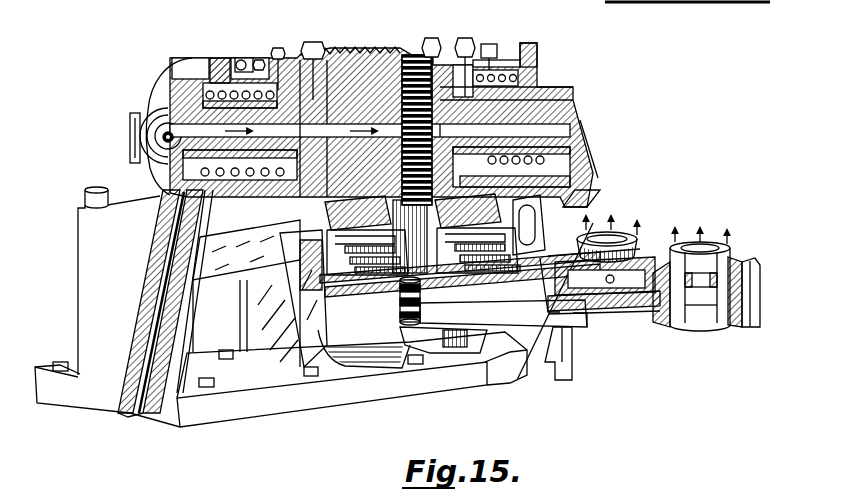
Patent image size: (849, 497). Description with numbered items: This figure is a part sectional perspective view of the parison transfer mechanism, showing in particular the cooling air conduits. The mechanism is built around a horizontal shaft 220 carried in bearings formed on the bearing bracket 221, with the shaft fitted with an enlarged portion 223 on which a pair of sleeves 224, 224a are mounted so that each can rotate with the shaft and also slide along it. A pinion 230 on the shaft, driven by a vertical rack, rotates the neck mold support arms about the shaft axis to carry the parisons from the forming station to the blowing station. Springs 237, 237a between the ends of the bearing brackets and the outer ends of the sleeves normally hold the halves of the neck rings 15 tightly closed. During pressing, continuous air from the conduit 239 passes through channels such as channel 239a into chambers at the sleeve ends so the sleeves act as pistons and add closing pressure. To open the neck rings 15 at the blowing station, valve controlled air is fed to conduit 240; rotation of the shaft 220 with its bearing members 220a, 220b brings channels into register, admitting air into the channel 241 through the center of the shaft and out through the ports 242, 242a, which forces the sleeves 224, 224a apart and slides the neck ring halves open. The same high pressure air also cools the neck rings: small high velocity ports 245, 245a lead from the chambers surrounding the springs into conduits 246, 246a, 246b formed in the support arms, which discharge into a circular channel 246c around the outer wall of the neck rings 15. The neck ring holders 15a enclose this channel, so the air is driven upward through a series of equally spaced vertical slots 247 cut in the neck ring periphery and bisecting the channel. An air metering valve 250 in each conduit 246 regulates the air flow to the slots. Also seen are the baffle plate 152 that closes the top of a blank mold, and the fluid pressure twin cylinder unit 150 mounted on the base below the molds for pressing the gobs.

The bearing bracket 221 is at (60, 276).
The bearing member 220a is at (126, 126).
The shaft 220 is at (128, 134).
The conduit 240 is at (164, 139).
The enlarged portion of the shaft 223 is at (355, 100).
The pinion 230 is at (406, 60).
The spring 237a is at (212, 62).
The sleeve 224a is at (240, 58).
The port 242 is at (295, 60).
The channel 241 is at (330, 60).
The port 242a is at (452, 62).
The sleeve 224 is at (497, 48).
The spring 237 is at (540, 72).
The bearing member 220b is at (574, 92).
The channel 239a is at (131, 422).
The high velocity port 245 is at (303, 235).
The conduit 246 is at (345, 283).
The air metering valve 250 is at (408, 325).
The fluid pressure twin cylinder unit 150 is at (508, 322).
The conduit 239 is at (514, 374).
The high velocity port 245a is at (545, 230).
The conduit 246a is at (563, 330).
The conduit 246b is at (640, 322).
The circular channel 246c is at (660, 328).
The vertical slots 247 is at (690, 328).
The baffle plate 152 is at (600, 228).
The neck rings 15 is at (622, 242).
The neck ring holders 15a is at (760, 274).